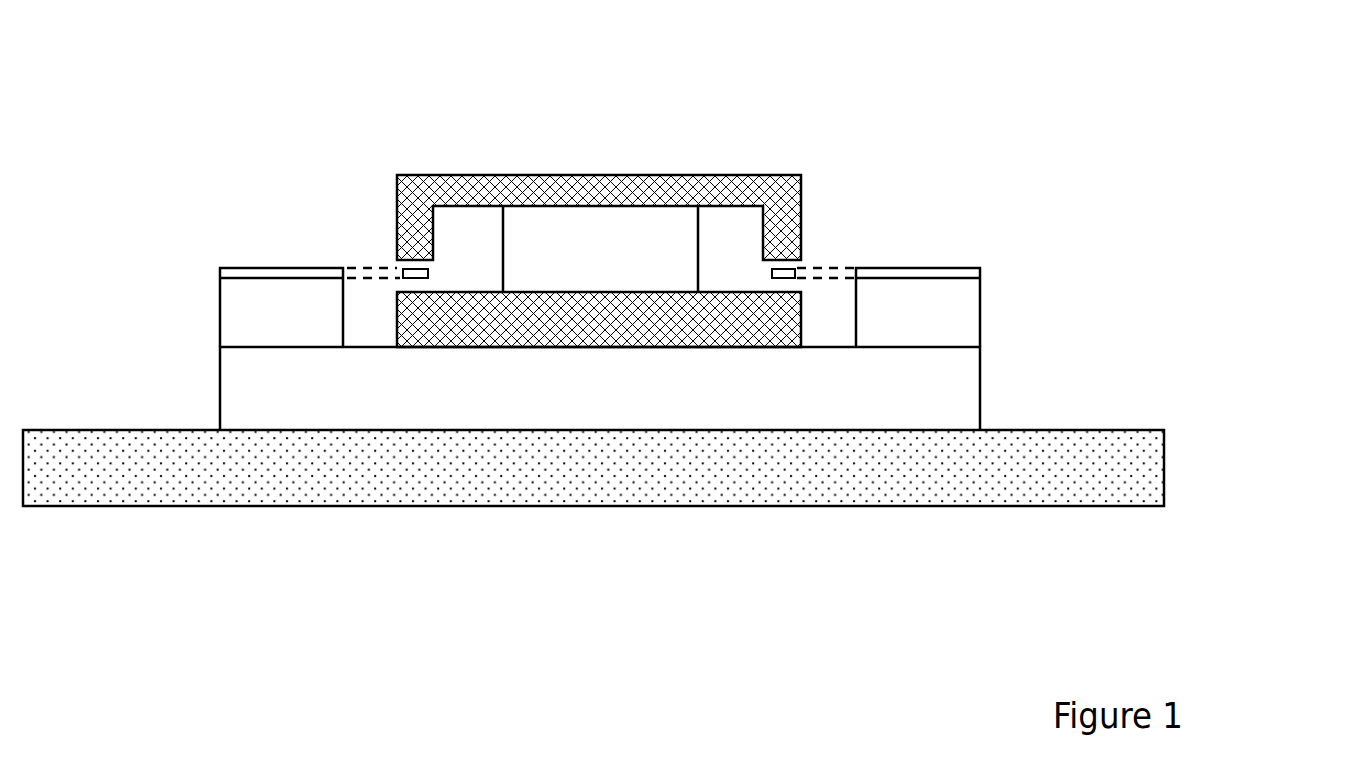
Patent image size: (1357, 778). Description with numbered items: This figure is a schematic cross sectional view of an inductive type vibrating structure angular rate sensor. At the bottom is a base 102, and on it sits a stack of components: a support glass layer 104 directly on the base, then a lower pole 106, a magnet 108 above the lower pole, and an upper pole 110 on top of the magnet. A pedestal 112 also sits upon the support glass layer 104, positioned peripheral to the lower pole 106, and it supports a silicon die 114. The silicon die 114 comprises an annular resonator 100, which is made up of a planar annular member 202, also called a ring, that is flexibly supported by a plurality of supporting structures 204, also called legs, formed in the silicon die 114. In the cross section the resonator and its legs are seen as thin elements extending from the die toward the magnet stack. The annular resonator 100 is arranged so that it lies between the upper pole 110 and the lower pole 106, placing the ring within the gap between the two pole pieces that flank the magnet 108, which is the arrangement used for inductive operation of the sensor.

The annular resonator 100 is at (357, 239).
The base 102 is at (1165, 468).
The support glass layer 104 is at (981, 389).
The lower pole 106 is at (801, 318).
The magnet 108 is at (532, 230).
The upper pole 110 is at (417, 210).
The pedestal 112 is at (982, 313).
The silicon die 114 is at (982, 268).
The planar annular member 202 is at (801, 260).
The supporting structures 204 is at (833, 268).